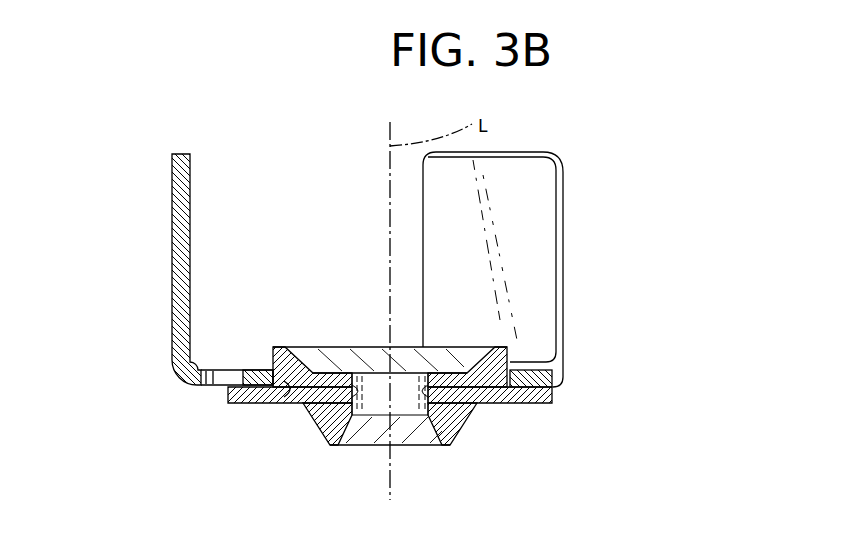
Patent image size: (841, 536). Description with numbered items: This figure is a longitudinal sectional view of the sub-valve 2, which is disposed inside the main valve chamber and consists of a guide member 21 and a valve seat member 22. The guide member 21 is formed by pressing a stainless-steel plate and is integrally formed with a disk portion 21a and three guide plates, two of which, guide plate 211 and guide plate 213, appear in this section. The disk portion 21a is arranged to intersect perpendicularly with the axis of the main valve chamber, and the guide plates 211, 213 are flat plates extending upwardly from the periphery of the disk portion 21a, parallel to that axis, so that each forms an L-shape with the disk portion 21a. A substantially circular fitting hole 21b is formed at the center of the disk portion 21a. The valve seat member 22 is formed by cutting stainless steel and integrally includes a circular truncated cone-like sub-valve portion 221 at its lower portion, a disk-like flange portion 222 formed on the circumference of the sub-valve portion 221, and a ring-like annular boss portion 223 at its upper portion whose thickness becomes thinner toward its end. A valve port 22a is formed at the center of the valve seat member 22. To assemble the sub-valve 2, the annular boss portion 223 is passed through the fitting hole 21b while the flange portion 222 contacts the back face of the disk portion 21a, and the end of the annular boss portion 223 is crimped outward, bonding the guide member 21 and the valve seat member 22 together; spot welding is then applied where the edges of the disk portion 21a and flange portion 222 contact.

The sub-valve 2 is at (541, 269).
The guide member 21 is at (188, 276).
The guide plate 211 is at (172, 203).
The disk portion 21a is at (262, 367).
The fitting hole 21b is at (294, 389).
The guide plate 213 is at (560, 218).
The valve seat member 22 is at (396, 400).
The valve port 22a is at (318, 427).
The sub-valve portion 221 is at (462, 425).
The flange portion 222 is at (552, 394).
The annular boss portion 223 is at (510, 356).